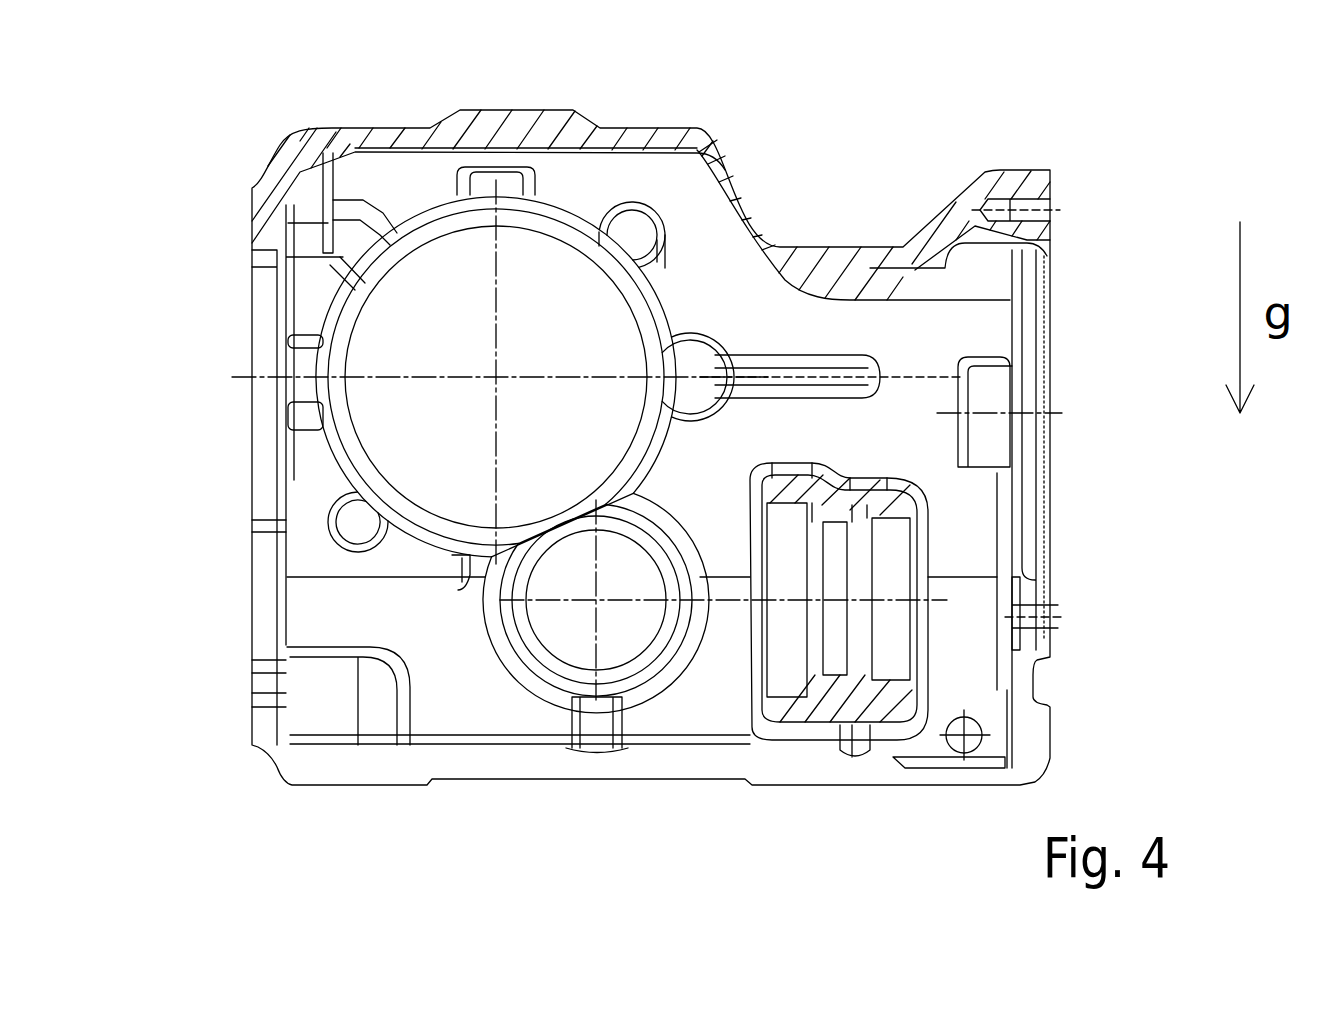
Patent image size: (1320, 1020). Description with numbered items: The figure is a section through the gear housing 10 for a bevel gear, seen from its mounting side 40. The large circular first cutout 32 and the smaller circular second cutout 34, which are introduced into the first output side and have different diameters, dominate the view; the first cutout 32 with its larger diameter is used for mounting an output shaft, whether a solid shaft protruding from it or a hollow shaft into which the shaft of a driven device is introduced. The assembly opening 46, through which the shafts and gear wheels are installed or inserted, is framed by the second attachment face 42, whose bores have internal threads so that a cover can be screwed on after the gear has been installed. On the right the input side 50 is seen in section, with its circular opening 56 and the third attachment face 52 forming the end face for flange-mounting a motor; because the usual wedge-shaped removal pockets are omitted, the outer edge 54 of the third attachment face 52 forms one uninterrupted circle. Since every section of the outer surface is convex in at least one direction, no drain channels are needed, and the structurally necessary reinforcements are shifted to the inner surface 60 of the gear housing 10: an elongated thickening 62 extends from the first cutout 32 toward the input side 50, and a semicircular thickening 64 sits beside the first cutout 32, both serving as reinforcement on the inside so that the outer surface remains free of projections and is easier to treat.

The gear housing 10 is at (218, 740).
The first cutout 32 is at (437, 292).
The second cutout 34 is at (612, 633).
The mounting side 40 is at (215, 483).
The second attachment face 42 is at (252, 207).
The assembly opening 46 is at (265, 303).
The input side 50 is at (1073, 418).
The third attachment face 52 is at (1035, 603).
The outer edge of third attachment face 54 is at (1050, 170).
The circular opening 56 is at (1040, 533).
The inner surface 60 is at (717, 232).
The elongated thickening 62 is at (783, 362).
The semicircular thickening 64 is at (630, 212).